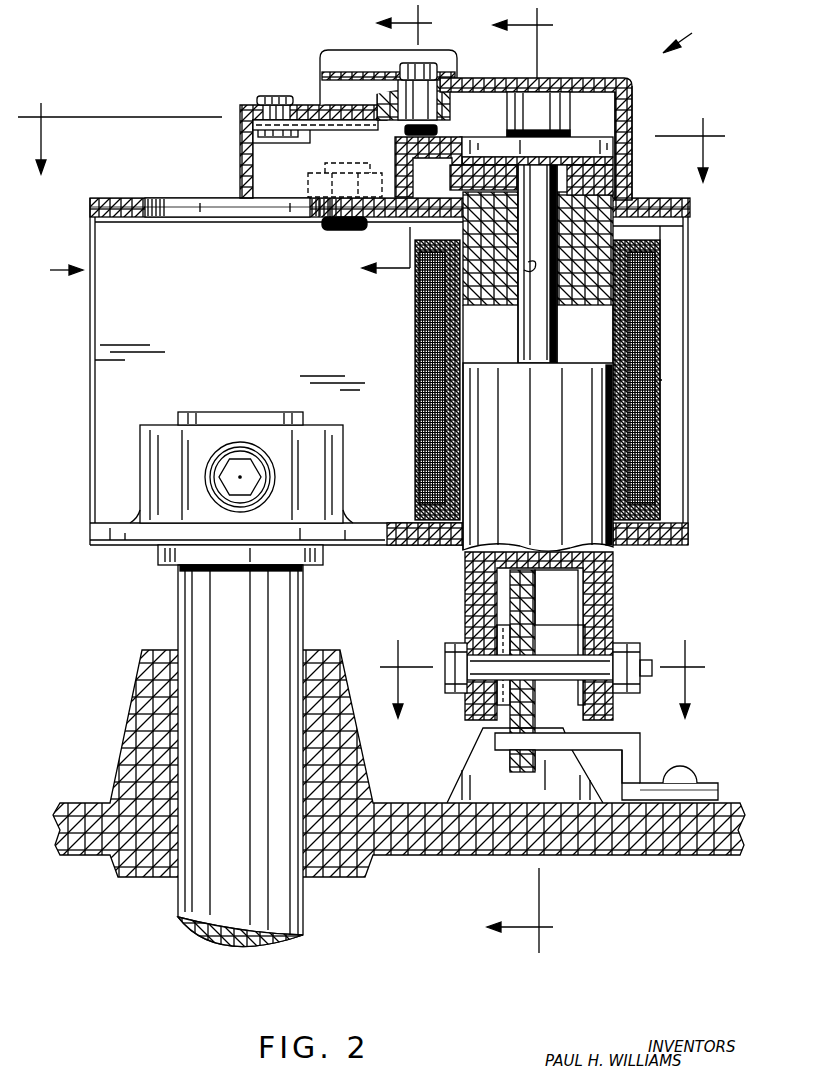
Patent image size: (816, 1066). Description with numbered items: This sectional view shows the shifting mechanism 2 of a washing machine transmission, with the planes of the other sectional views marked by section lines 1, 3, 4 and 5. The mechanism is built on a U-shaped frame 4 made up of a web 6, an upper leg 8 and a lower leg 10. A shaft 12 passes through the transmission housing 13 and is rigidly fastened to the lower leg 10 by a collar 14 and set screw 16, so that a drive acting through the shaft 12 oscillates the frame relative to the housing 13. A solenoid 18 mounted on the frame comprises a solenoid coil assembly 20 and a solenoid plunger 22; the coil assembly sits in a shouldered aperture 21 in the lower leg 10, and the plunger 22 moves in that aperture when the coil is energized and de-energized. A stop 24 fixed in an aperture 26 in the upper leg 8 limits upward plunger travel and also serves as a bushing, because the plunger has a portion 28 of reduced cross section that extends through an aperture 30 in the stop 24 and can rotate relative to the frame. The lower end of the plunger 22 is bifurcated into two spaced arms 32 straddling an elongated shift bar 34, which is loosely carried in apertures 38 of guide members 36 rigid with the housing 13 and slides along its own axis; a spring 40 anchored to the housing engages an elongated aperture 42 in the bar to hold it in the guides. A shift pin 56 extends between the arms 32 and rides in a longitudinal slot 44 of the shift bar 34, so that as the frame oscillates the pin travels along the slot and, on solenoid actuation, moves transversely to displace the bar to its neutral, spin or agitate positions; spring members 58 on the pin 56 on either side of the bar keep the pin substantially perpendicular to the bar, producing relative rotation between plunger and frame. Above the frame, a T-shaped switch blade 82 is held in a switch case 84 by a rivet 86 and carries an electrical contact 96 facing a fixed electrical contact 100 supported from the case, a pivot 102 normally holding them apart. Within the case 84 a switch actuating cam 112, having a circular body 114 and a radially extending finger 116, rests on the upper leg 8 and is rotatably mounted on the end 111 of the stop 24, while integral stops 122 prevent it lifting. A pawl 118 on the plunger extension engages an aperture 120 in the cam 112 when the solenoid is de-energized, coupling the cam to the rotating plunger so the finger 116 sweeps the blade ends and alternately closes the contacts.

The section line 1- 1 is at (373, 131).
The shifting mechanism 2 is at (690, 33).
The section line 3— 3 is at (534, 480).
The U-shaped frame 4 is at (363, 488).
The section line 5— 5 is at (381, 144).
The web 6 is at (242, 298).
The upper leg 8 is at (124, 199).
The lower leg 10 is at (120, 541).
The shaft 12 is at (180, 912).
The transmission housing 13 is at (80, 802).
The collar 14 is at (152, 440).
The set screw 16 is at (243, 452).
The solenoid 18 is at (398, 348).
The solenoid coil assembly 20 is at (425, 431).
The shouldered aperture 21 is at (467, 540).
The solenoid plunger 22 is at (490, 472).
The stop 24 is at (500, 293).
The aperture 26 is at (578, 225).
The portion of reduced cross section 28 is at (534, 352).
The aperture in stop 30 is at (525, 268).
The arms 32 is at (466, 586).
The shift bar 34 is at (530, 622).
The guide members 36 is at (470, 773).
The apertures 38 is at (536, 760).
The spring 40 is at (646, 758).
The elongated aperture 42 is at (500, 742).
The slot 44 is at (526, 645).
The shift pin 56 is at (592, 670).
The spring member 58 is at (498, 640).
The switch blade 82 is at (372, 120).
The switch case 84 is at (240, 153).
The rivet 86 is at (276, 96).
The electrical contact 96 is at (440, 118).
The fixed electrical contact 100 is at (415, 72).
The pivot 102 is at (440, 110).
The end of stop 111 is at (622, 182).
The switch actuating cam 112 is at (548, 130).
The circular body 114 is at (622, 128).
The finger 116 is at (456, 167).
The pawl 118 is at (597, 157).
The aperture 120 is at (612, 145).
The stops 122 is at (548, 90).